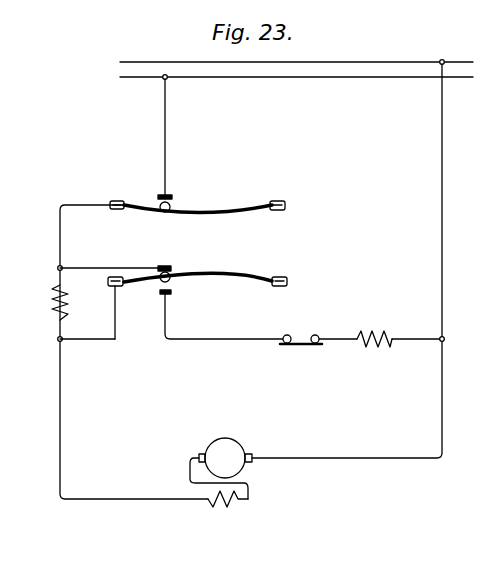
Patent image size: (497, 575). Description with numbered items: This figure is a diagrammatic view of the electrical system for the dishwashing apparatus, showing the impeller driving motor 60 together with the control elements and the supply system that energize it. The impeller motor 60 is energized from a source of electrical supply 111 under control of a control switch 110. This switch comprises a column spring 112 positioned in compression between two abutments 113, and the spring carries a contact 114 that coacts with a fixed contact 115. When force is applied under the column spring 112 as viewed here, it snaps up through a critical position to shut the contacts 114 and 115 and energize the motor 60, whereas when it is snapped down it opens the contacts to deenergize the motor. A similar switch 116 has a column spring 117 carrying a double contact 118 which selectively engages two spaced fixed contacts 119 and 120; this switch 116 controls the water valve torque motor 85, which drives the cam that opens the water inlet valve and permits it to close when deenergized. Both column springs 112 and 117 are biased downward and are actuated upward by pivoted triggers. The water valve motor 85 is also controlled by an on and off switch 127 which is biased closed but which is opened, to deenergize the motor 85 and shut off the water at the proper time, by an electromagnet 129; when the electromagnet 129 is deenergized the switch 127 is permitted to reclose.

The source of electrical supply 111 is at (333, 77).
The control switch 110 is at (202, 204).
The column spring 112 is at (216, 213).
The abutments 113 is at (116, 211).
The contact 114 is at (173, 209).
The fixed contact 115 is at (172, 198).
The switch 116 is at (197, 285).
The column spring 117 is at (240, 280).
The double contact 118 is at (160, 280).
The fixed contact 119 is at (178, 251).
The fixed contact 120 is at (170, 295).
The electromagnet 129 is at (52, 300).
The on and off switch 127 is at (300, 346).
The electric motor 85 is at (368, 336).
The electric driving motor 60 is at (229, 442).